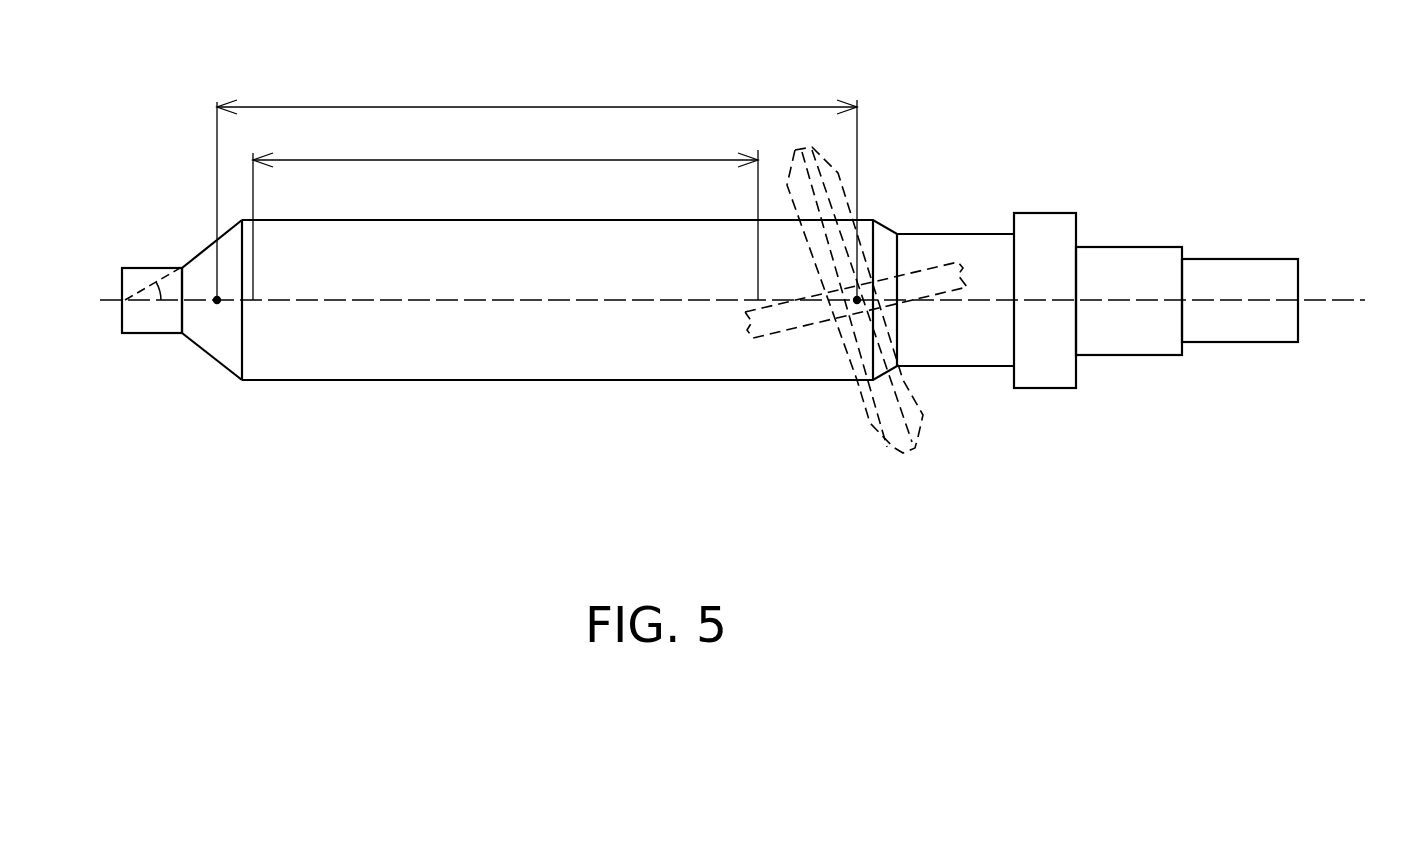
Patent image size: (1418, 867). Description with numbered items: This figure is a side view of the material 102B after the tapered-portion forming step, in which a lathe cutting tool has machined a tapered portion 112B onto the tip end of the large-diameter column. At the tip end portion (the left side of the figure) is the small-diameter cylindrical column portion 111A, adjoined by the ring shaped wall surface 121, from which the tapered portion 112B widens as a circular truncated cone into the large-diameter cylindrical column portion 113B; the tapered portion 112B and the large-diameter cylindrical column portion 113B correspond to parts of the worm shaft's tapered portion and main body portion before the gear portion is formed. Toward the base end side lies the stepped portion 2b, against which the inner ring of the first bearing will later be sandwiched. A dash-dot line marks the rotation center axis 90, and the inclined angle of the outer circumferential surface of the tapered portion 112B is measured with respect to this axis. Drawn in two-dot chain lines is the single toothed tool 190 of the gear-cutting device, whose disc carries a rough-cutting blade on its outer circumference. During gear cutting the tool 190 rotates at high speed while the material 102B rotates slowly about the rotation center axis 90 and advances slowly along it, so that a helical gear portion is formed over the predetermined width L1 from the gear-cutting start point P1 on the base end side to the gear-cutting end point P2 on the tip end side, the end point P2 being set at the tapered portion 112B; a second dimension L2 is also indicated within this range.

The material 102B is at (666, 268).
The small-diameter cylindrical column portion 111A is at (130, 334).
The ring shaped wall surface 121 is at (168, 337).
The tapered portion 112B is at (225, 372).
The large-diameter cylindrical column portion 113B is at (457, 381).
The stepped portion 2b is at (1078, 363).
The rotation center axis 90 is at (1350, 300).
The tool 190 is at (903, 455).
The gear-cutting start point P1 is at (857, 300).
The gear-cutting end point P2 is at (217, 298).
The predetermined width L1 is at (537, 187).
The length L2 is at (505, 212).